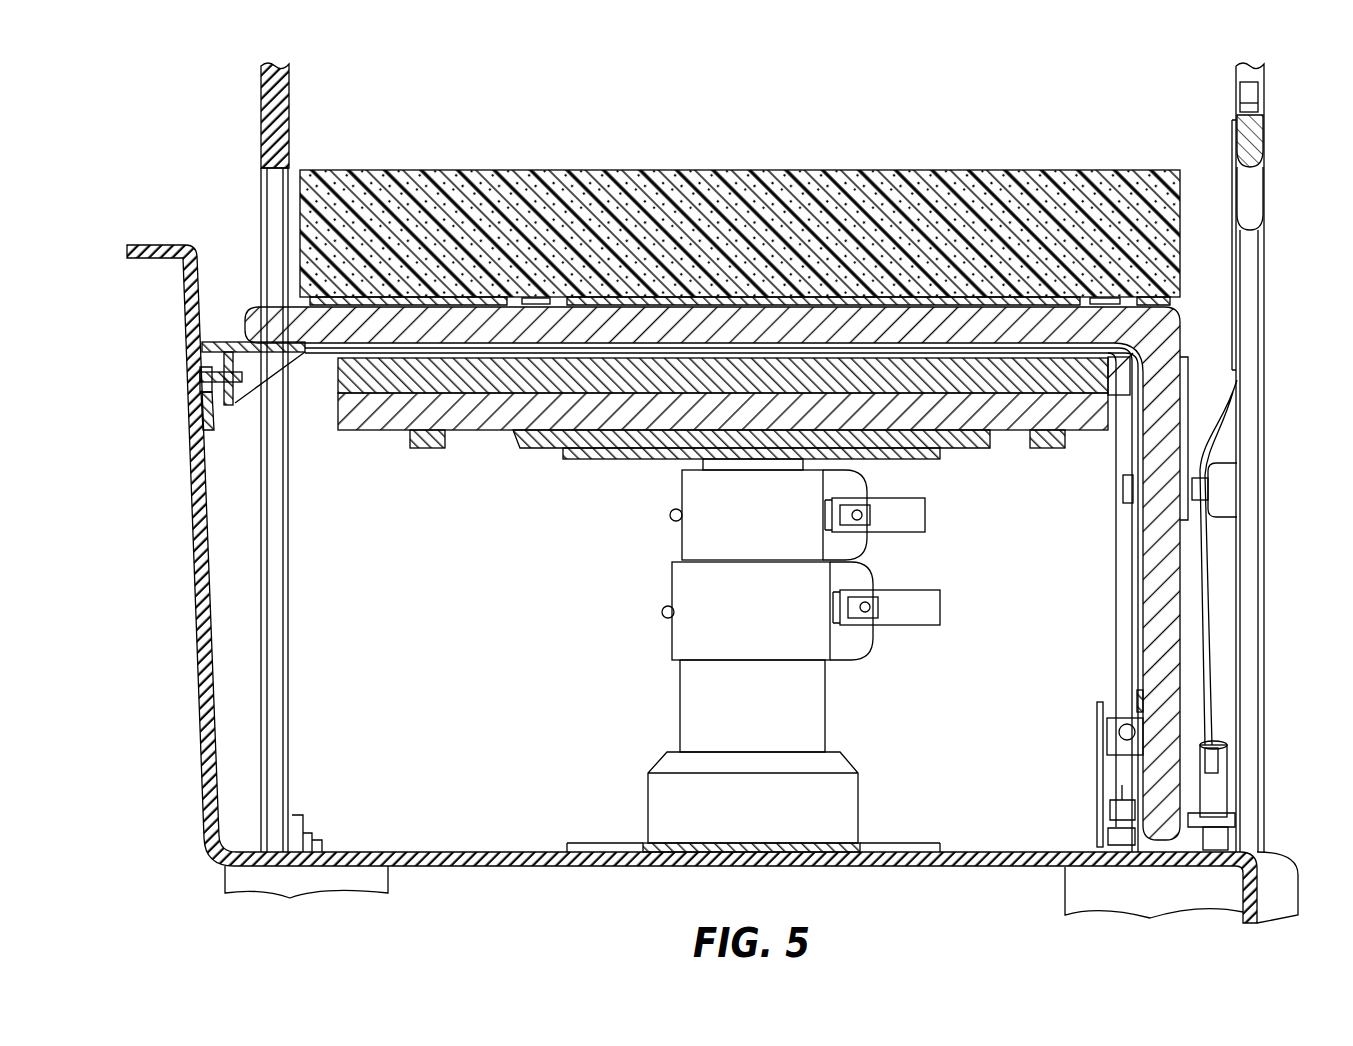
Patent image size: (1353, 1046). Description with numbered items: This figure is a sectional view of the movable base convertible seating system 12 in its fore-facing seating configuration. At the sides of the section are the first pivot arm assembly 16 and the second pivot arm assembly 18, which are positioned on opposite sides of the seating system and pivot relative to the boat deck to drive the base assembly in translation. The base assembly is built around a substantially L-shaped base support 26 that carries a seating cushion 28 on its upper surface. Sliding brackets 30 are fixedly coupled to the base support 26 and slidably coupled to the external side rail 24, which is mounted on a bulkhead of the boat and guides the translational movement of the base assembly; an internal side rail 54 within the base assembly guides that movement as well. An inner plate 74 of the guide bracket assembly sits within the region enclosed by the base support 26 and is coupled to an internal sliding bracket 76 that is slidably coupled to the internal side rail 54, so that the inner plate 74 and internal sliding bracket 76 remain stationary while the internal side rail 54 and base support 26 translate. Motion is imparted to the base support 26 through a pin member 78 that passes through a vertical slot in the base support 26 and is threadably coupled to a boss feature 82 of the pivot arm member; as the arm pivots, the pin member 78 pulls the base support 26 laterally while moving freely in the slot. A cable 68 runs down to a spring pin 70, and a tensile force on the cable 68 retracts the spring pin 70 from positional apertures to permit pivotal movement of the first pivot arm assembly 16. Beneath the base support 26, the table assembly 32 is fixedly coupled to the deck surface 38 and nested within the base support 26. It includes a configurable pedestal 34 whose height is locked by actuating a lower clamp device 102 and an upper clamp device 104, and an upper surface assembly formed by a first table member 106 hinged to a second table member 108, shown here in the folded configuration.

The movable base convertible seating system 12 is at (118, 112).
The first pivot arm assembly 16 is at (1276, 242).
The second pivot arm assembly 18 is at (238, 212).
The side rail 24 is at (215, 415).
The base support 26 is at (642, 330).
The seating cushion 28 is at (793, 170).
The sliding bracket 30 is at (257, 367).
The table assembly 32 is at (972, 530).
The configurable pedestal 34 is at (640, 733).
The deck surface 38 is at (500, 868).
The internal side rail 54 is at (1136, 708).
The cable 68 is at (1212, 653).
The spring pin 70 is at (1227, 840).
The inner plate 74 is at (1098, 784).
The internal sliding bracket 76 is at (1108, 717).
The pin member 78 is at (1127, 503).
The boss feature 82 is at (1220, 517).
The lower clamp device 102 is at (905, 617).
The upper clamp device 104 is at (890, 525).
The first table member 106 is at (480, 374).
The second table member 108 is at (598, 407).